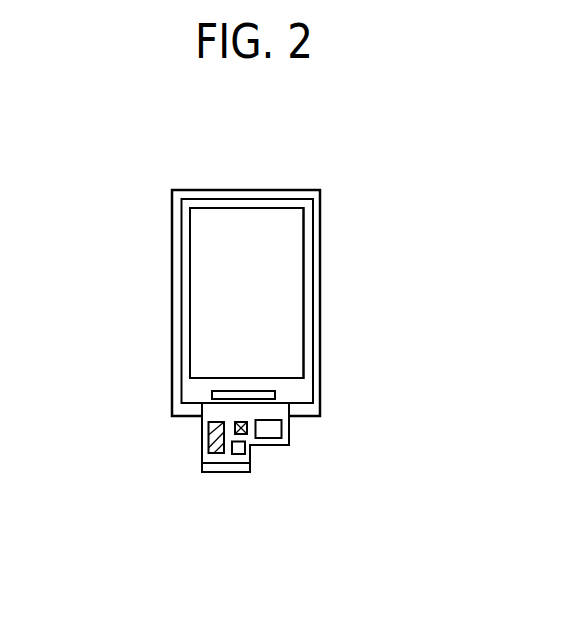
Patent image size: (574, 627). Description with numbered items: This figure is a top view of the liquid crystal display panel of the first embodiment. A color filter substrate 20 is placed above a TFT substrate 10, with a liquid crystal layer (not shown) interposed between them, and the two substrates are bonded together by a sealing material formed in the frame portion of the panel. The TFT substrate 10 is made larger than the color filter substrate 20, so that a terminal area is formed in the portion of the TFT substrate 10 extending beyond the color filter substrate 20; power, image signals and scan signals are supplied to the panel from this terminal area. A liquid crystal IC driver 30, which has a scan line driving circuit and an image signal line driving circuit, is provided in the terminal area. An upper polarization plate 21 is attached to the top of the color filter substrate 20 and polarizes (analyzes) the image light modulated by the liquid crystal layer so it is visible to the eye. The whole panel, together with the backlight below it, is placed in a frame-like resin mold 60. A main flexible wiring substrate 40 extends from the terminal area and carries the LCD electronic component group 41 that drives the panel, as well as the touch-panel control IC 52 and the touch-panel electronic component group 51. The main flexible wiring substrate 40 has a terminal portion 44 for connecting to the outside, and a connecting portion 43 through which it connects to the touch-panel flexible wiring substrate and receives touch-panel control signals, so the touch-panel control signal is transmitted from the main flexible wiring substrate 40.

The TFT substrate 10 is at (298, 397).
The color filter substrate 20 is at (306, 272).
The upper polarization plate 21 is at (282, 225).
The liquid crystal IC driver 30 is at (245, 393).
The main flexible wiring substrate 40 is at (285, 441).
The LCD electronic component group 41 is at (213, 438).
The connecting portion 43 is at (240, 427).
The terminal portion 44 is at (232, 468).
The touch-panel electronic component group 51 is at (268, 431).
The touch-panel control IC 52 is at (242, 450).
The resin mold 60 is at (207, 195).